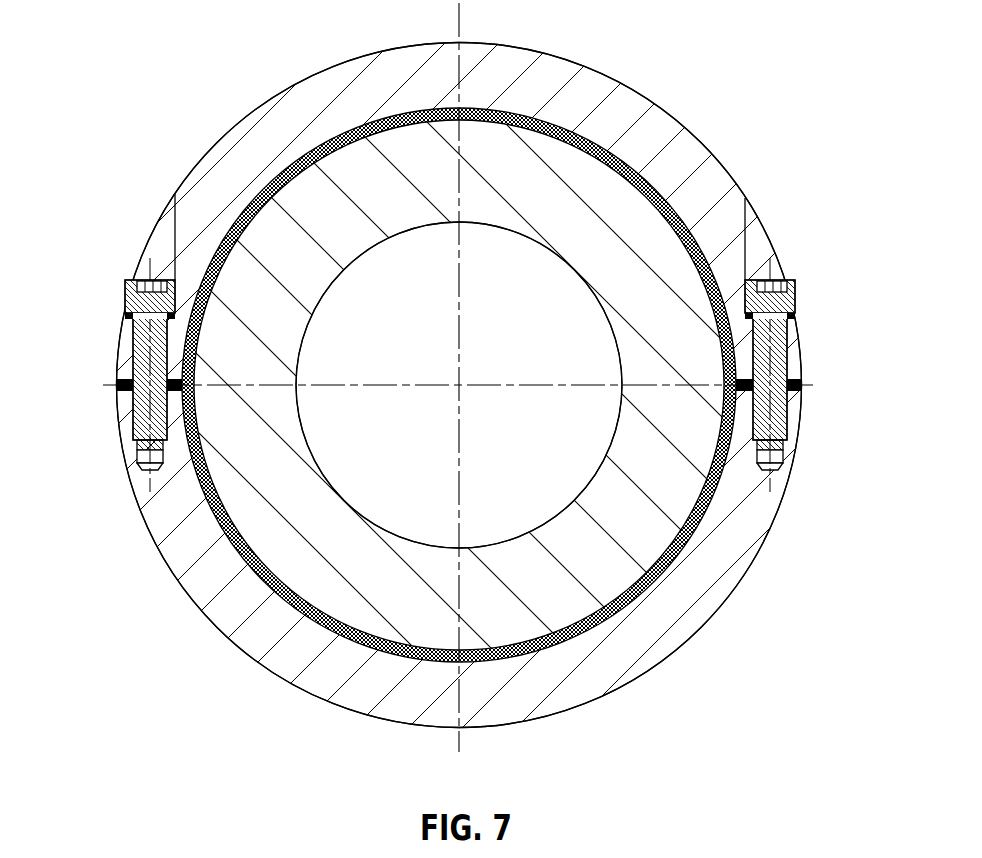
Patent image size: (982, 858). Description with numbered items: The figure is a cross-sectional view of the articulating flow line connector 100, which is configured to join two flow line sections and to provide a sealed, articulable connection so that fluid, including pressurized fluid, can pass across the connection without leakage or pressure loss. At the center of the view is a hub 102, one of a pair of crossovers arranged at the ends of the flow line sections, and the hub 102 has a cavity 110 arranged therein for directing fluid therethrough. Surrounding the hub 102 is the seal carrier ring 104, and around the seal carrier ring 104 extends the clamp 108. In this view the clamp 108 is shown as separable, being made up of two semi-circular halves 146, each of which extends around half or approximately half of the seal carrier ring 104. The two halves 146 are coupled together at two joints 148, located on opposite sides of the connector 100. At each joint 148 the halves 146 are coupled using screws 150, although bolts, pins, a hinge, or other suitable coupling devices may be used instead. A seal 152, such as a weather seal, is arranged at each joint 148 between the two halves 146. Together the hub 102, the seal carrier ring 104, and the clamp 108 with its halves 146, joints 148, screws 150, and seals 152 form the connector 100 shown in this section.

The articulating flow line connector 100 is at (176, 29).
The hub 102 is at (640, 522).
The seal carrier ring 104 is at (627, 167).
The clamp 108 is at (228, 153).
The cavity 110 is at (535, 343).
The semi-circular halves 146 is at (553, 85).
The joints 148 is at (106, 347).
The screws 150 is at (125, 291).
The seal 152 is at (127, 393).